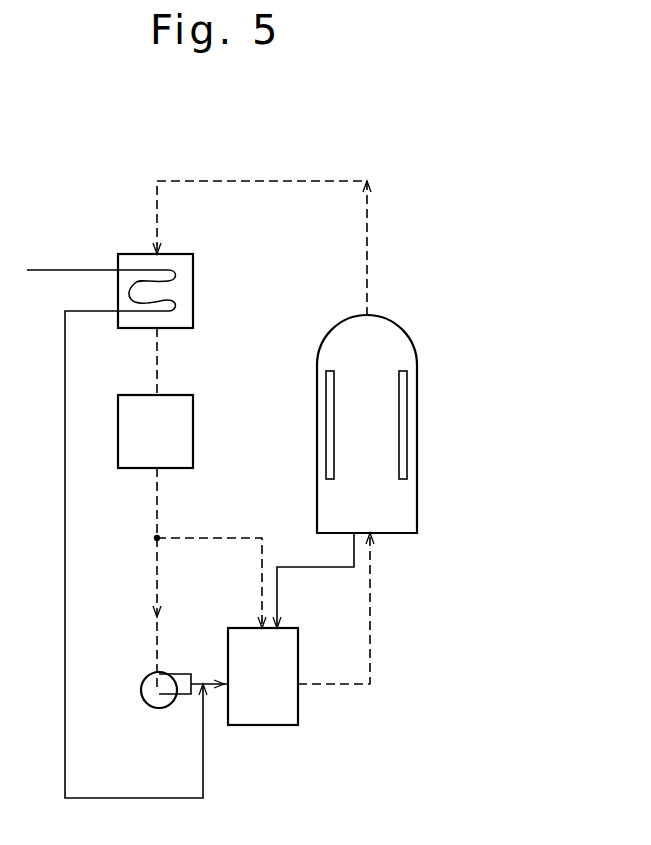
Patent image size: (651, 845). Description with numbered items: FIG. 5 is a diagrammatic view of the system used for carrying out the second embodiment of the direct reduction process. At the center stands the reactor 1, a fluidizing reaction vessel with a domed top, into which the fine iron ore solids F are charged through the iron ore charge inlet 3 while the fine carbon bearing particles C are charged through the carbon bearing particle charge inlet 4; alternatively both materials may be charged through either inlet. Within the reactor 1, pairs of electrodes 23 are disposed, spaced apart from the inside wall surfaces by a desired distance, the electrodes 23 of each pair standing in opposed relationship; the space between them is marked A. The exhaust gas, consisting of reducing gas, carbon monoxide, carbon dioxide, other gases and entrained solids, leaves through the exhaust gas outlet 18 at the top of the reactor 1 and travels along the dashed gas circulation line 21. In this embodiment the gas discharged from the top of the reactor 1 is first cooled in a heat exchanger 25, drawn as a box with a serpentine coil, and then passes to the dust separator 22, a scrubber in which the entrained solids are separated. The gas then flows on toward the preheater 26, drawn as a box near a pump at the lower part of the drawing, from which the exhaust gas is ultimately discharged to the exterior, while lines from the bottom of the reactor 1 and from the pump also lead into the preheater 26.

The reactor 1 is at (398, 513).
The iron ore charge inlet 3 is at (396, 323).
The carbon bearing particle charge inlet 4 is at (334, 329).
The exhaust gas outlet 18 is at (367, 316).
The gas circulation line 21 is at (305, 181).
The dust separator 22 is at (175, 423).
The electrodes 23 is at (330, 448).
The heat exchanger 25 is at (187, 289).
The preheater 26 is at (280, 702).
The interior space A is at (368, 411).
The fine carbon bearing particles C is at (398, 320).
The fine iron ore solids F is at (333, 326).